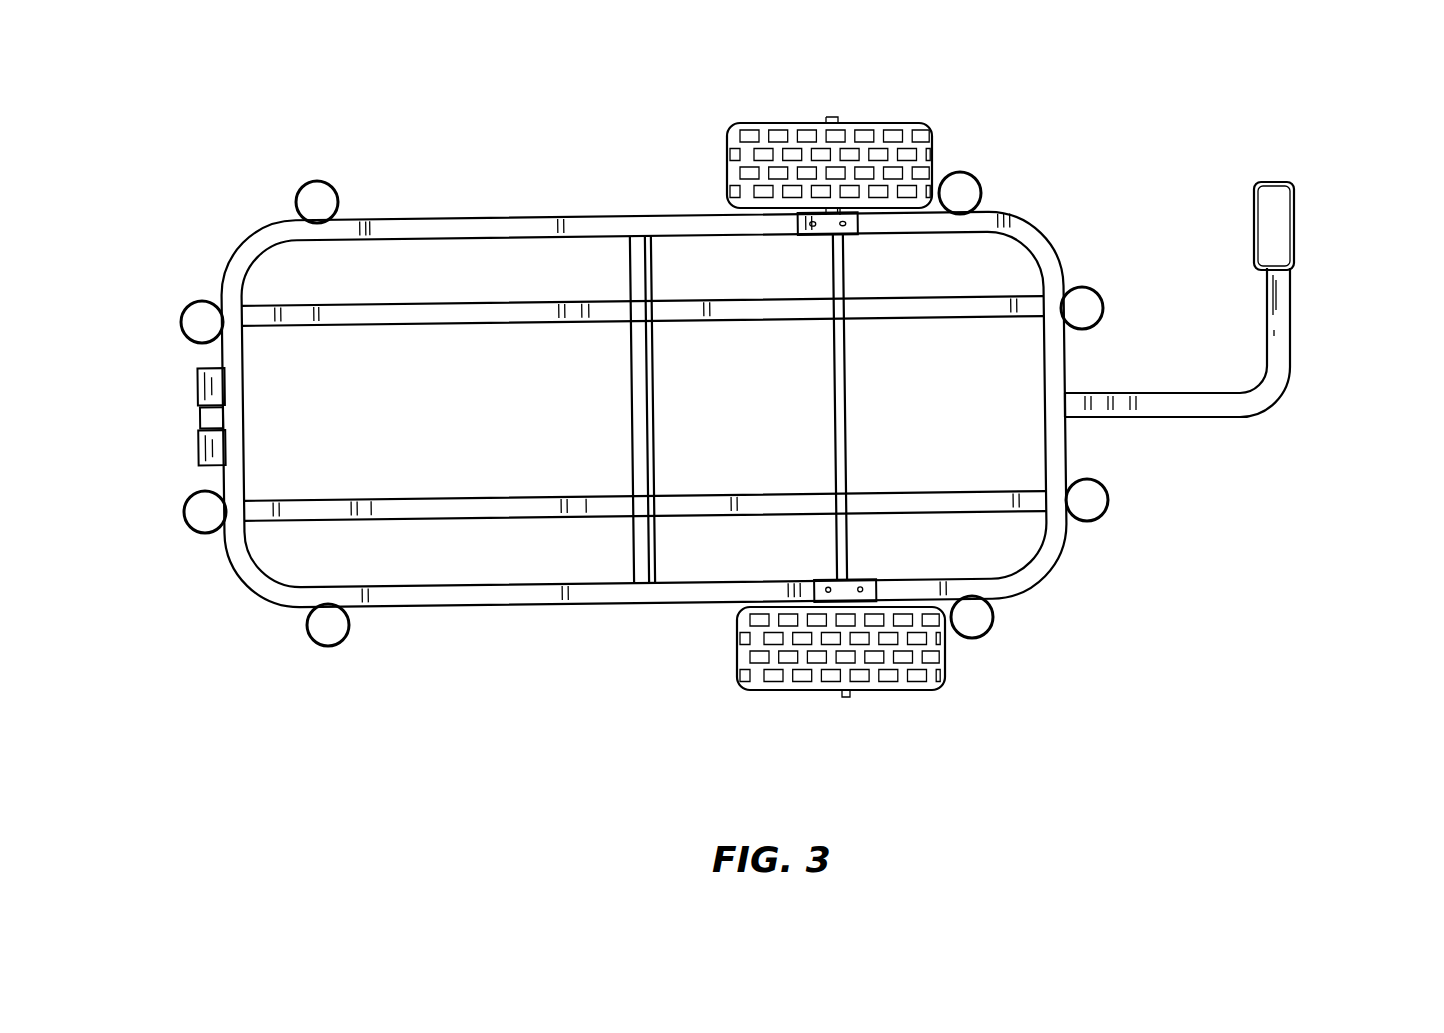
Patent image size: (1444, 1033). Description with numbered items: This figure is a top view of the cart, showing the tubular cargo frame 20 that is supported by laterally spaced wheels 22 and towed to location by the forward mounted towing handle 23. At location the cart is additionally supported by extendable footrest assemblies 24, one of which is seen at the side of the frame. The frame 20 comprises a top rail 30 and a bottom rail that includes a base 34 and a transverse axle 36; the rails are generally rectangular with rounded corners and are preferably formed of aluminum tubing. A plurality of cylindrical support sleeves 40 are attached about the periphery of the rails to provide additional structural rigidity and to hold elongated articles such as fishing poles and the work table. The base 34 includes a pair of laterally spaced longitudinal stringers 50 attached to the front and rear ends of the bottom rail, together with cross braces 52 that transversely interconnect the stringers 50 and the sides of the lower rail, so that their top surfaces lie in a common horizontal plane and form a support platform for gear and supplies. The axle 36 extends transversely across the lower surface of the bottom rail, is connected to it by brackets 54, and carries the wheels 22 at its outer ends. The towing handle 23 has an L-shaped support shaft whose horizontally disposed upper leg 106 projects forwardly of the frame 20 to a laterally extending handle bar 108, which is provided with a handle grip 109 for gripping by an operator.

The tubular cargo frame 20 is at (425, 217).
The wheels 22 is at (737, 142).
The towing handle 23 is at (1252, 417).
The footrest assemblies 24 is at (198, 389).
The top rail 30 is at (246, 252).
The base 34 is at (470, 329).
The transverse axle 36 is at (846, 409).
The cylindrical support sleeves 40 is at (975, 181).
The longitudinal stringers 50 is at (760, 317).
The cross braces 52 is at (650, 272).
The brackets 54 is at (838, 233).
The upper leg 106 is at (1116, 409).
The handle bar 108 is at (1290, 331).
The handle grip 109 is at (1285, 222).